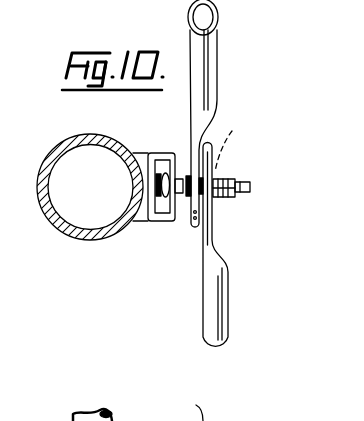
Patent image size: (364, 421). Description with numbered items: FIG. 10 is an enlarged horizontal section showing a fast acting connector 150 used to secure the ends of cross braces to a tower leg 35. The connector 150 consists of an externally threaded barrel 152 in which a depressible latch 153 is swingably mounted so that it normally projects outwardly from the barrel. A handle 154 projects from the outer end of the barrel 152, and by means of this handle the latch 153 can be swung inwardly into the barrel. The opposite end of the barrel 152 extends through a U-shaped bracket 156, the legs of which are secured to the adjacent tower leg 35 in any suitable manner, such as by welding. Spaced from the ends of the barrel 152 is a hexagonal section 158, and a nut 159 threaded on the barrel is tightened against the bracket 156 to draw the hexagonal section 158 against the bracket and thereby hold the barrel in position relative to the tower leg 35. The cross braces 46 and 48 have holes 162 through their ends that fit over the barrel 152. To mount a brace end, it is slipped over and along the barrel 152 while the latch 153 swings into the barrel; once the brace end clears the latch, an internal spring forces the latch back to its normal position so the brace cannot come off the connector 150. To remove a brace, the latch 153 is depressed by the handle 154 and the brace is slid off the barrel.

The tower leg 35 is at (58, 231).
The brace 46 is at (208, 55).
The brace 48 is at (222, 300).
The fast acting connector 150 is at (246, 184).
The externally threaded barrel 152 is at (217, 200).
The depressible latch 153 is at (229, 179).
The handle 154 is at (244, 192).
The U-shaped bracket 156 is at (147, 222).
The hexagonal section 158 is at (182, 153).
The nut 159 is at (142, 150).
The hole 162 is at (241, 145).